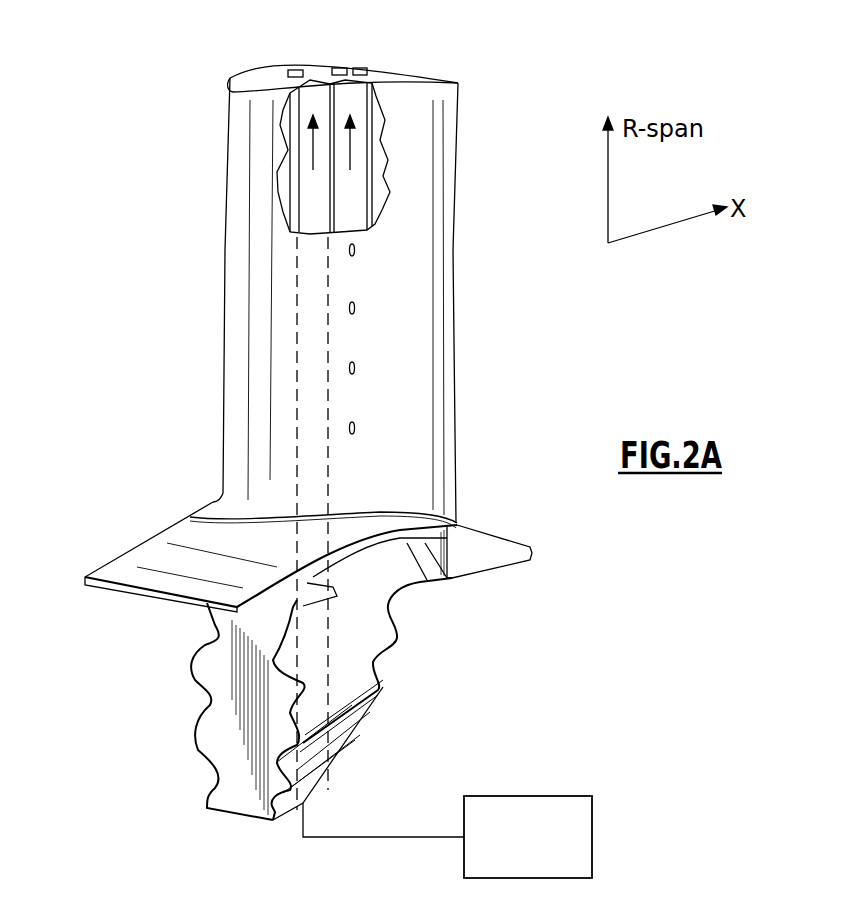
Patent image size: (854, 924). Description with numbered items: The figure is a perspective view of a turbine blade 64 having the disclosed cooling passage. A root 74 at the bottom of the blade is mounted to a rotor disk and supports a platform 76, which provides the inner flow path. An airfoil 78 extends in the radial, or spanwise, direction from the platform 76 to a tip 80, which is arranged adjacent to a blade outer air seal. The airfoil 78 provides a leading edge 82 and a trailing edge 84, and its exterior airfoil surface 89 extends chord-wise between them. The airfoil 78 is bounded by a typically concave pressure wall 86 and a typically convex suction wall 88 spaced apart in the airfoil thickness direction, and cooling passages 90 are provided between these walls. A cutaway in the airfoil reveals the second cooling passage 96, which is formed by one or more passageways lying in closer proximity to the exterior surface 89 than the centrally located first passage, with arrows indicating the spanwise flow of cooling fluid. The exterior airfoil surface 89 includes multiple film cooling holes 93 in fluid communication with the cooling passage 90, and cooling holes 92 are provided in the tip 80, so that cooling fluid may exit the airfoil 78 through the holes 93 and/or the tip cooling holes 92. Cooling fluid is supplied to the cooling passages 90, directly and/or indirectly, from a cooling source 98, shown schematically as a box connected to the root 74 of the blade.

The turbine blade 64 is at (320, 405).
The root 74 is at (230, 715).
The platform 76 is at (348, 527).
The airfoil 78 is at (348, 444).
The tip 80 is at (325, 46).
The leading edge 82 is at (225, 250).
The trailing edge 84 is at (458, 237).
The pressure wall 86 is at (370, 293).
The suction wall 88 is at (362, 38).
The exterior airfoil surface 89 is at (407, 330).
The cooling passages 90 is at (390, 157).
The cooling holes 92 is at (357, 66).
The film cooling holes 93 is at (382, 339).
The second cooling passage 96 is at (350, 183).
The cooling source 98 is at (592, 823).